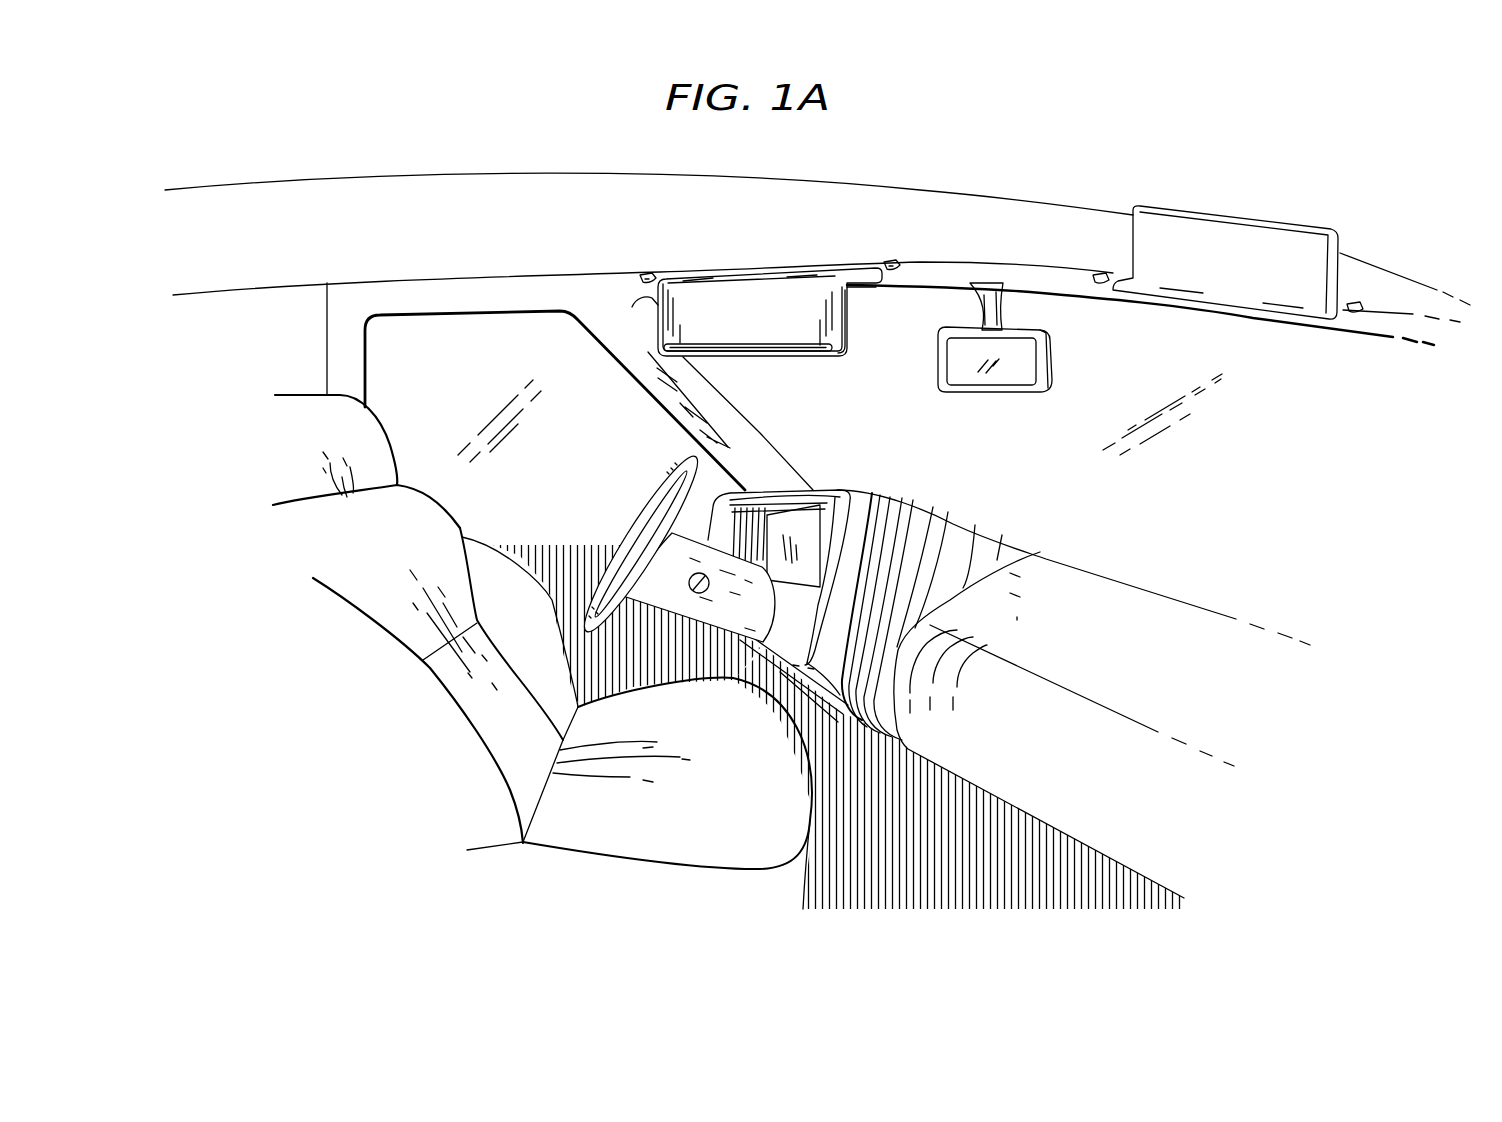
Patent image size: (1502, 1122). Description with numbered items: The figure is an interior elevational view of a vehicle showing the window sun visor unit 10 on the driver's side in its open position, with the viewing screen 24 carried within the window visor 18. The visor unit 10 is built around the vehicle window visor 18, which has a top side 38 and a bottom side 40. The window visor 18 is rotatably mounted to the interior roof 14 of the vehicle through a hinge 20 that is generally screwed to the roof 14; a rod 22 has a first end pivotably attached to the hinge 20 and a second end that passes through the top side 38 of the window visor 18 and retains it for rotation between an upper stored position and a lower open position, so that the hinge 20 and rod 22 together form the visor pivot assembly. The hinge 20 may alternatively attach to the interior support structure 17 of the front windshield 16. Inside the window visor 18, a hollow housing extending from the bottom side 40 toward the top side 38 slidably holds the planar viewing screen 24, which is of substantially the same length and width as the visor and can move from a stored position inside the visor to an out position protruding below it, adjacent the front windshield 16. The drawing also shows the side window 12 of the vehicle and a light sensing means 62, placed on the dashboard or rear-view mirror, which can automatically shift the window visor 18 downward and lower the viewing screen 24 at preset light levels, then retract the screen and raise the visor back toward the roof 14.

The window sun visor unit 10 is at (783, 317).
The side window 12 is at (564, 462).
The interior roof 14 is at (406, 236).
The front windshield 16 is at (1067, 470).
The interior support structure 17 is at (435, 300).
The window visor 18 is at (752, 307).
The hinge 20 is at (650, 276).
The rod 22 is at (800, 275).
The viewing screen 24 is at (755, 352).
The top side 38 is at (730, 272).
The bottom side 40 is at (818, 356).
The light sensing means 62 is at (850, 483).